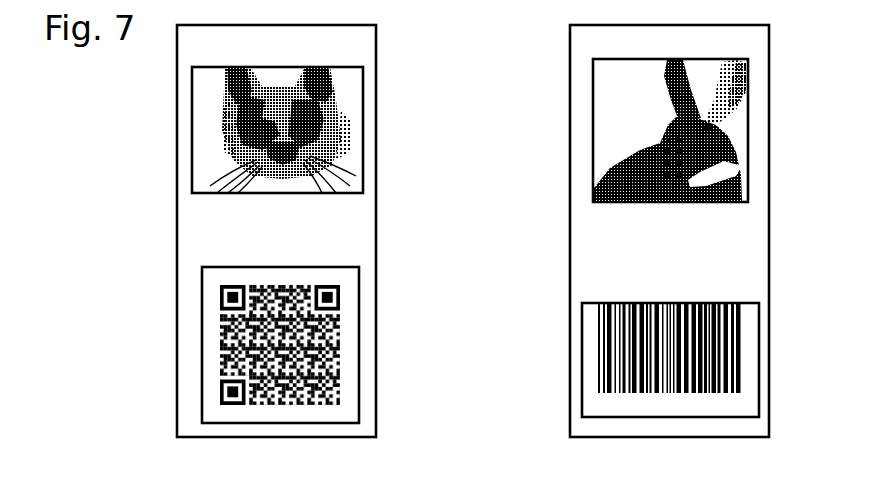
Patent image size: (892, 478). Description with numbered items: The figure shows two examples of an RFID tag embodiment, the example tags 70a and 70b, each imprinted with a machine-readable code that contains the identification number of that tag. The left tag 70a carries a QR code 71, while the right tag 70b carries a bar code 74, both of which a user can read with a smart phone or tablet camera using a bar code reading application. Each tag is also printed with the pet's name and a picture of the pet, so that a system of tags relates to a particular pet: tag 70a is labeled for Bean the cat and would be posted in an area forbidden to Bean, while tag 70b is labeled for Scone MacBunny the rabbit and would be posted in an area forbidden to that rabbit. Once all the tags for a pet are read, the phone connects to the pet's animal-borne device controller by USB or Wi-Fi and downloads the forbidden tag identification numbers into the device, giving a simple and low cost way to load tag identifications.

The RFID tag 70a is at (377, 53).
The RFID tag 70b is at (770, 52).
The QR code 71 is at (350, 312).
The bar code 74 is at (742, 313).